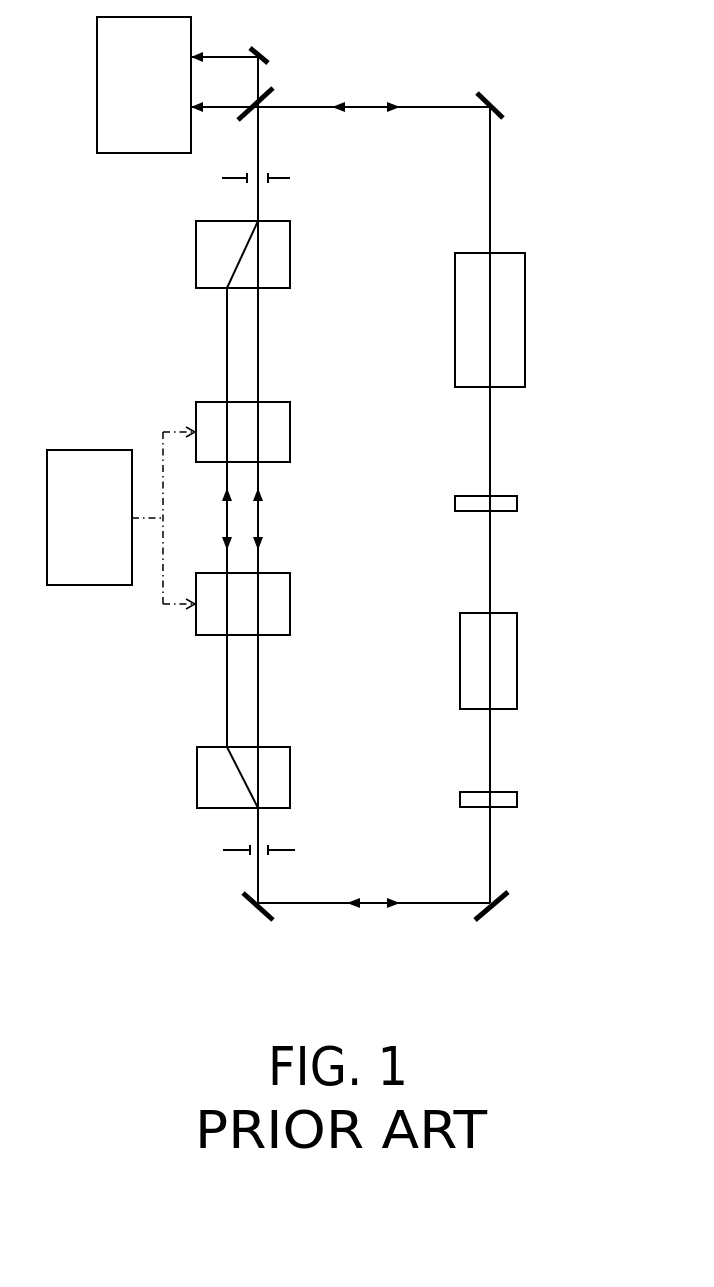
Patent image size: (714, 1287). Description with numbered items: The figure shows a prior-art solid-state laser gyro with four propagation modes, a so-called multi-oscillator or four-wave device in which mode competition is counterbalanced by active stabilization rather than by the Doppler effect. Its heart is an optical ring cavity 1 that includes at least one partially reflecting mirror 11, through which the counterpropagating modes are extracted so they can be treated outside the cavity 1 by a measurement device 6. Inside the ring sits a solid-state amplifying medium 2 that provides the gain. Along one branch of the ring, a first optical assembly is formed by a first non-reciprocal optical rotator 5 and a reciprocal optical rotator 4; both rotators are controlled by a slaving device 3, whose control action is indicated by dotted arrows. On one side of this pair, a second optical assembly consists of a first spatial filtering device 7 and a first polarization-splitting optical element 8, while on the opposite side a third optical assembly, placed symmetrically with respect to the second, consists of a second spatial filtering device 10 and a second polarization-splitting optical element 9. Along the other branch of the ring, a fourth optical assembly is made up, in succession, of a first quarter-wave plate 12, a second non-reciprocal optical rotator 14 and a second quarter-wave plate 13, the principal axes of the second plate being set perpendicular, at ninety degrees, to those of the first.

The optical ring cavity 1 is at (349, 466).
The solid-state amplifying medium 2 is at (507, 297).
The slaving device 3 is at (121, 560).
The reciprocal optical rotator 4 is at (275, 607).
The first non-reciprocal optical rotator 5 is at (275, 432).
The measurement device 6 is at (100, 120).
The first spatial filtering device 7 is at (285, 842).
The first polarization-splitting optical element 8 is at (275, 767).
The second polarization-splitting optical element 9 is at (281, 265).
The second spatial filtering device 10 is at (290, 178).
The partially reflecting mirror 11 is at (273, 88).
The first quarter-wave plate 12 is at (477, 800).
The second quarter-wave plate 13 is at (475, 503).
The second non-reciprocal optical rotator 14 is at (476, 662).